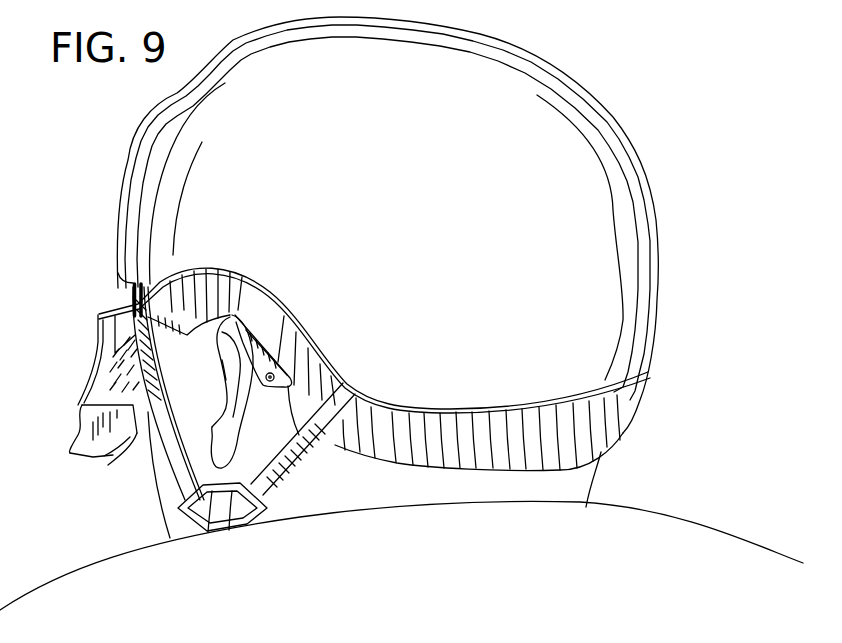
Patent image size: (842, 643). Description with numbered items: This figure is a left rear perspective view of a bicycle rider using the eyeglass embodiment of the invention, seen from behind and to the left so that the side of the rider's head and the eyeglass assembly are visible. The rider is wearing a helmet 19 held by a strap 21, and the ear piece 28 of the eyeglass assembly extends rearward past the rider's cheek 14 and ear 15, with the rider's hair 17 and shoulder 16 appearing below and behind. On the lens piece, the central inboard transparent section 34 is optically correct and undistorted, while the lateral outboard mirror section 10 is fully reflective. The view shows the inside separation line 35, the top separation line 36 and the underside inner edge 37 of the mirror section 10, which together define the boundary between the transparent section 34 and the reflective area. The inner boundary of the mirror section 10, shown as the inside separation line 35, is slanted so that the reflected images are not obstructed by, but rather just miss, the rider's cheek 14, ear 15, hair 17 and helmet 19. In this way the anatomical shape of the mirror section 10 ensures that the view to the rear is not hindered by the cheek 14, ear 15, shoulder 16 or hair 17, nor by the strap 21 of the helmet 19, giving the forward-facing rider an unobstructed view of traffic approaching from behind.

The mirror section 10 is at (76, 443).
The cheek 14 is at (173, 385).
The ear 15 is at (250, 407).
The shoulder 16 is at (117, 573).
The hair 17 is at (363, 428).
The helmet 19 is at (618, 323).
The strap 21 is at (173, 452).
The ear piece 28 is at (128, 302).
The transparent section 34 is at (96, 372).
The inside separation line 35 is at (104, 456).
The top separation line 36 is at (103, 403).
The underside inner edge 37 is at (128, 458).